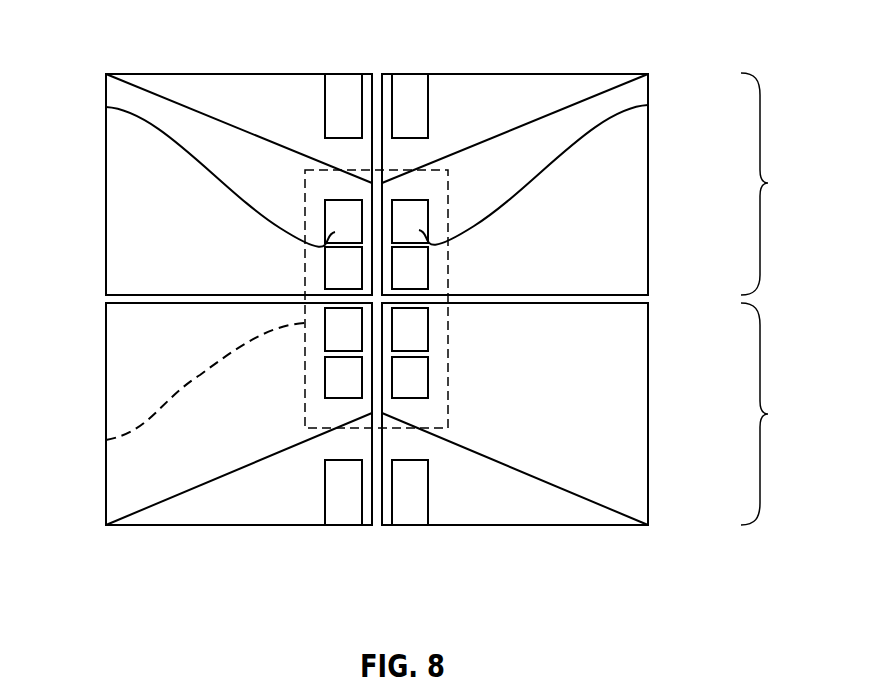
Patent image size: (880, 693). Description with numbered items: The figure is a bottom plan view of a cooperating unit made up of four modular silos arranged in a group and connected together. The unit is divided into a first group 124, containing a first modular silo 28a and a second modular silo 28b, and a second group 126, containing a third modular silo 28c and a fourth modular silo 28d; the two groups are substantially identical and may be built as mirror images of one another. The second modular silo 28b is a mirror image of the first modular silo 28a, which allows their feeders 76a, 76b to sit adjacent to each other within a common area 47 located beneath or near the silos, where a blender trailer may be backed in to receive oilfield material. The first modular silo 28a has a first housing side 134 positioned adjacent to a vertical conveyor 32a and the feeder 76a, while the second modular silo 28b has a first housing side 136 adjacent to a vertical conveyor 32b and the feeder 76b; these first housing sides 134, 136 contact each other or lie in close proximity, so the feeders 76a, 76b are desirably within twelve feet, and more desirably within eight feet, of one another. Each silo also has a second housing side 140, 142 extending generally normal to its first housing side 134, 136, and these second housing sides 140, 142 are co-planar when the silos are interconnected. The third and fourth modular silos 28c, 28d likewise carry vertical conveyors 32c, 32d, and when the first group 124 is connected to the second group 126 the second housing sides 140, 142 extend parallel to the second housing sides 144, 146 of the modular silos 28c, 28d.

The first modular silo 28a is at (106, 182).
The second modular silo 28b is at (648, 178).
The third modular silo 28c is at (203, 510).
The fourth modular silo 28d is at (550, 510).
The vertical conveyor 32a is at (350, 87).
The vertical conveyor 32b is at (413, 83).
The vertical conveyor 32c is at (347, 510).
The vertical conveyor 32d is at (408, 510).
The feeder 76a is at (106, 107).
The feeder 76b is at (648, 105).
The common area 47 is at (106, 440).
The first housing side 134 is at (383, 110).
The first housing side 136 is at (378, 110).
The second housing side 140 is at (140, 303).
The second housing side 142 is at (614, 303).
The second housing side 144 is at (110, 303).
The second housing side 146 is at (644, 303).
The first group 124 is at (779, 184).
The second group 126 is at (779, 414).